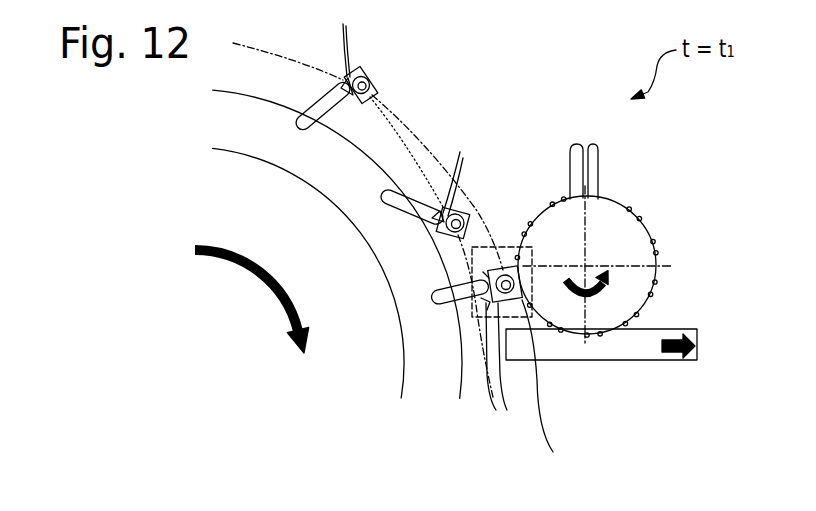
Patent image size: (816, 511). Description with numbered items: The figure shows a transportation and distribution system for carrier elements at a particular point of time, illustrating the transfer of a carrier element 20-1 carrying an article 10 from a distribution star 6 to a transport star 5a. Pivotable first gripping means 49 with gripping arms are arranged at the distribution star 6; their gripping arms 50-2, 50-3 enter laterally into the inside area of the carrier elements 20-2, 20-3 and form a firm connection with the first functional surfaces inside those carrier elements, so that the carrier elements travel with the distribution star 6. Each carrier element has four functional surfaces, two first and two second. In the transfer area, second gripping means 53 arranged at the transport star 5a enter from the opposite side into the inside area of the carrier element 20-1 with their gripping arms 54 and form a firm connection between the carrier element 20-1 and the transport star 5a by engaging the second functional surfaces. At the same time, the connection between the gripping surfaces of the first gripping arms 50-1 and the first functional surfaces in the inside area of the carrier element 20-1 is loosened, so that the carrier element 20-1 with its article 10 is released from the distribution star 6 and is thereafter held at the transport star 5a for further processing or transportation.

The distribution star 6 is at (226, 304).
The first gripping means 49 is at (297, 126).
The article 10 is at (367, 95).
The carrier element 20-1 is at (503, 268).
The carrier element 20-2 is at (437, 228).
The carrier element 20-3 is at (354, 69).
The first gripping arm 50-1 is at (506, 374).
The gripping arm 50-2 is at (473, 172).
The gripping arm 50-3 is at (319, 47).
The second gripping means 53 is at (607, 157).
The gripping arm 54 is at (609, 157).
The transport star 5a is at (608, 260).